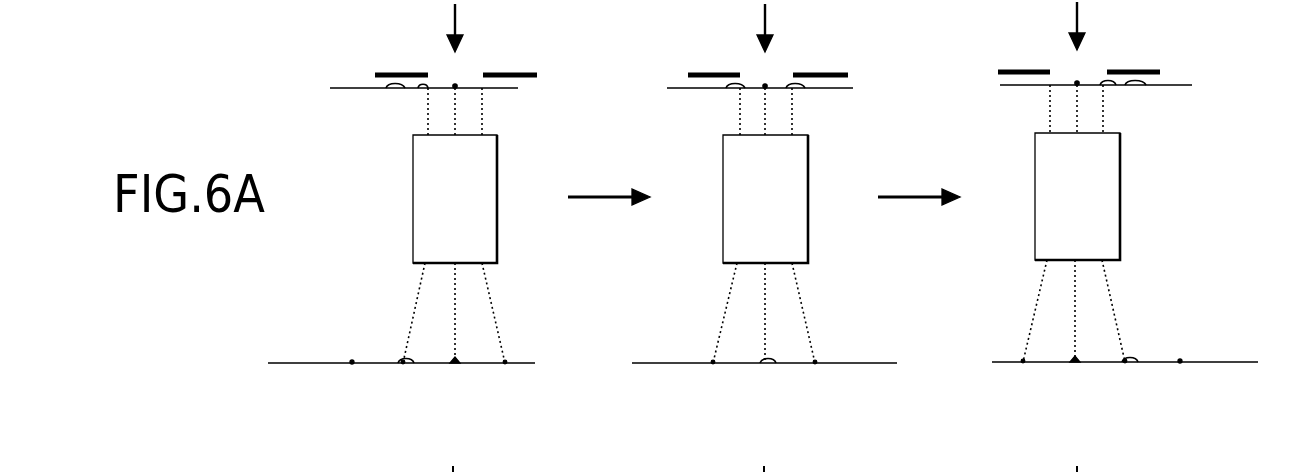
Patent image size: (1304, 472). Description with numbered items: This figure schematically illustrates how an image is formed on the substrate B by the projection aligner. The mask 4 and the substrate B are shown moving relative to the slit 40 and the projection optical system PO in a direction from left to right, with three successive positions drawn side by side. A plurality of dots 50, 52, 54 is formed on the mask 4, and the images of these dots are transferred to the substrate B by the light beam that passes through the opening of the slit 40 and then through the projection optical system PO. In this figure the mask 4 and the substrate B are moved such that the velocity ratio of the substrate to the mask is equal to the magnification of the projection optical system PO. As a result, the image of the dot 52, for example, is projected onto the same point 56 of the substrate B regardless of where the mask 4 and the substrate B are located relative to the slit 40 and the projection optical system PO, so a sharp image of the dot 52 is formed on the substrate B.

The mask 4 is at (341, 88).
The slit 40 is at (517, 73).
The dot 50 is at (455, 88).
The dot 52 is at (425, 88).
The dot 54 is at (395, 88).
The point 56 is at (412, 364).
The projection optical system PO is at (413, 233).
The substrate B is at (300, 363).